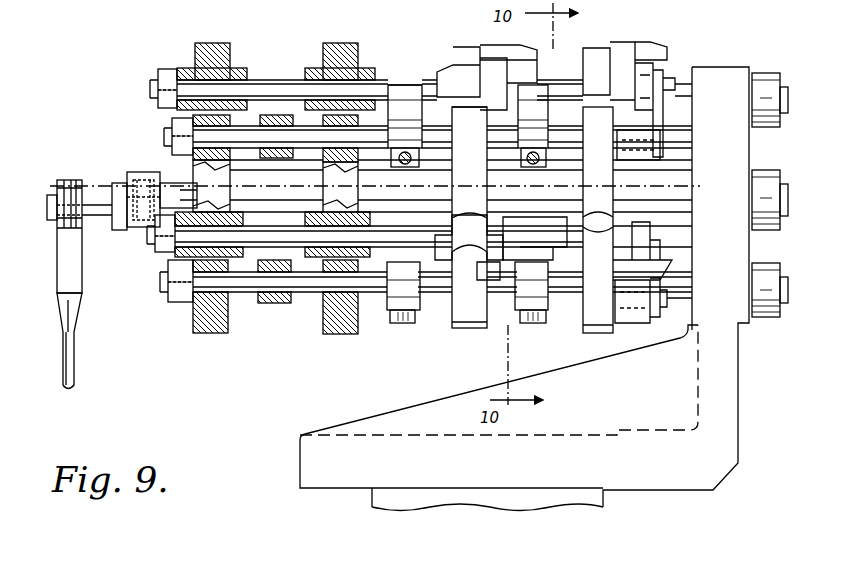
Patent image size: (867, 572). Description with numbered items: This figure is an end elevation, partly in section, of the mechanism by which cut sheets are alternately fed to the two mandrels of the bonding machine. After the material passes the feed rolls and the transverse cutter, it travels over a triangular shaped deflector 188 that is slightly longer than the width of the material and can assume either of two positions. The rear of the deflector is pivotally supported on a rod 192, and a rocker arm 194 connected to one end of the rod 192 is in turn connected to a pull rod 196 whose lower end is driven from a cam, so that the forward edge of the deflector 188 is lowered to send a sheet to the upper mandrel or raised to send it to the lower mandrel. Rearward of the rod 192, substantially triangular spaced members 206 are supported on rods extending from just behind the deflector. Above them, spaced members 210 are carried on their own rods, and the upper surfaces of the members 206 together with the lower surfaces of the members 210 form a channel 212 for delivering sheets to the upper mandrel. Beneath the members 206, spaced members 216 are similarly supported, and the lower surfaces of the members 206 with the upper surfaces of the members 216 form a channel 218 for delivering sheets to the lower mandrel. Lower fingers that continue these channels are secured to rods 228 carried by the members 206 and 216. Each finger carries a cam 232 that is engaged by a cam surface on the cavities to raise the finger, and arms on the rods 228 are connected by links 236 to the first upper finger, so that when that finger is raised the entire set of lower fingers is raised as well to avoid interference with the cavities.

The deflector 188 is at (272, 176).
The rod 192 is at (95, 205).
The rocker arm 194 is at (50, 195).
The pull rod 196 is at (72, 353).
The spaced members 206 is at (467, 123).
The spaced members 210 is at (212, 44).
The channel 212 is at (298, 110).
The spaced members 216 is at (208, 333).
The channel 218 is at (322, 258).
The rods 228 is at (172, 133).
The cam 232 is at (522, 73).
The links 236 is at (647, 277).